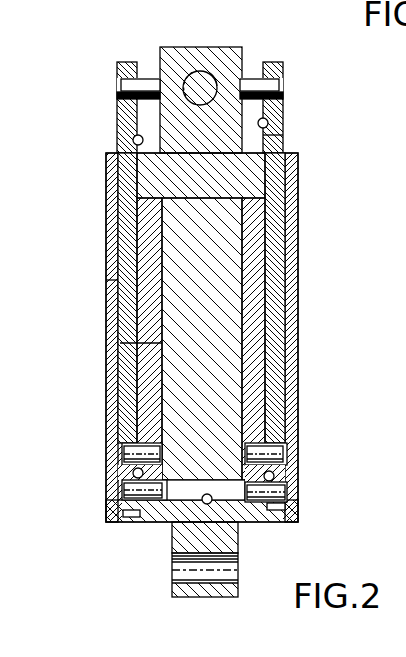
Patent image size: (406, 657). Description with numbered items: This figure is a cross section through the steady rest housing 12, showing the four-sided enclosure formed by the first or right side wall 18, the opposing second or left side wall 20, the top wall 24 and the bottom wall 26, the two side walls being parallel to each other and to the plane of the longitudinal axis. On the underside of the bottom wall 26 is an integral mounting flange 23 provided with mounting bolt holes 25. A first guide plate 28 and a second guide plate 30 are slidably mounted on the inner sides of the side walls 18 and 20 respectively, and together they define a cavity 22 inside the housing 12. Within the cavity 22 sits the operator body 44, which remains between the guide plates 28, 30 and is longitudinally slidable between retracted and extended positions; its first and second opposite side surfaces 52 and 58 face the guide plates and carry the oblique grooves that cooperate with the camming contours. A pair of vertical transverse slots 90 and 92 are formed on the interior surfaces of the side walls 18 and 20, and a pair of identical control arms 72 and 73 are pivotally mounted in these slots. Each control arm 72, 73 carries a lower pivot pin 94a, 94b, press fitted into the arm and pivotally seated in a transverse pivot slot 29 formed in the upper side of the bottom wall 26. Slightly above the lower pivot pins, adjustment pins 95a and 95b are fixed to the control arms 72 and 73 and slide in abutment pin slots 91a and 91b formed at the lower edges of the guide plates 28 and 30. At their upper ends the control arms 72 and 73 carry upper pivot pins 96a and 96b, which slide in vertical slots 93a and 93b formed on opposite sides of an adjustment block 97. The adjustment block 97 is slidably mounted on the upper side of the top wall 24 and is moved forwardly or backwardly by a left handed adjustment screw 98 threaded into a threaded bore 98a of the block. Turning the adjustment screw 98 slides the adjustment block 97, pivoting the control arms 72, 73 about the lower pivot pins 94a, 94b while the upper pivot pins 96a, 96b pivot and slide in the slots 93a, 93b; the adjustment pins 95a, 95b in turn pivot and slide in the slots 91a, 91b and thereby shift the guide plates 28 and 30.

The housing 12 is at (300, 175).
The first side wall 18 is at (290, 296).
The second side wall 20 is at (112, 318).
The cavity 22 is at (164, 240).
The mounting flange 23 is at (172, 533).
The top wall 24 is at (283, 138).
The mounting bolt holes 25 is at (180, 572).
The bottom wall 26 is at (247, 515).
The first guide plate 28 is at (255, 217).
The transverse pivot slot 29 is at (212, 504).
The second guide plate 30 is at (140, 216).
The operator body 44 is at (187, 371).
The first side surface 52 is at (247, 338).
The second side surface 58 is at (120, 343).
The control arm 72 is at (283, 108).
The control arm 73 is at (122, 122).
The transverse slot 90 is at (283, 262).
The abutment pin slot 91a is at (280, 475).
The abutment pin slot 91b is at (135, 473).
The transverse slot 92 is at (122, 279).
The vertical slot 93a is at (268, 128).
The vertical slot 93b is at (134, 141).
The lower pivot pin 94a is at (285, 497).
The lower pivot pin 94b is at (125, 497).
The adjustment pin 95a is at (273, 447).
The adjustment pin 95b is at (137, 448).
The upper pivot pin 96a is at (283, 75).
The upper pivot pin 96b is at (122, 76).
The adjustment block 97 is at (170, 53).
The adjustment screw 98 is at (206, 74).
The threaded bore 98a is at (221, 72).